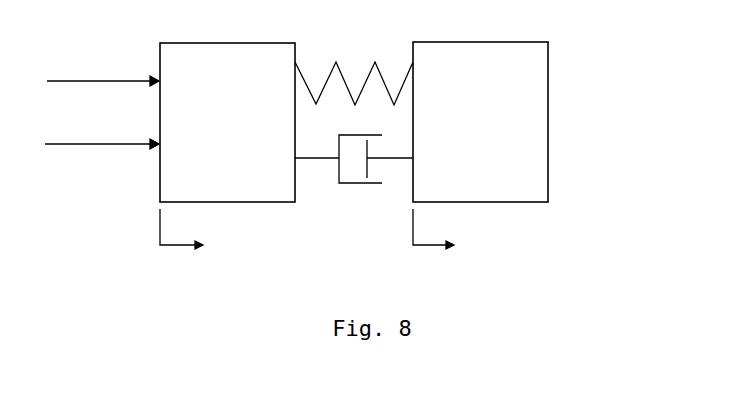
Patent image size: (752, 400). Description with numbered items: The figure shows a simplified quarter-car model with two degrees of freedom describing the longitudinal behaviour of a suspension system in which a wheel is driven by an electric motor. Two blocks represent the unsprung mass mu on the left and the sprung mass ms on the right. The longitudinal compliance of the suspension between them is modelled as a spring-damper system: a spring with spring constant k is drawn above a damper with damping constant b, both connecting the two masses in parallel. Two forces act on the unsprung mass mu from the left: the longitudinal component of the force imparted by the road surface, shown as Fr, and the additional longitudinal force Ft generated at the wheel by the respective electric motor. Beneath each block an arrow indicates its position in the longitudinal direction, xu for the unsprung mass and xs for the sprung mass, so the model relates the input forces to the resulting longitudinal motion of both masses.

The unsprung mass mu is at (227, 122).
The sprung mass ms is at (480, 122).
The spring constant k is at (354, 60).
The damping constant b is at (354, 189).
The longitudinal road force Fr is at (103, 71).
The additional longitudinal force Ft is at (102, 134).
The unsprung mass longitudinal position xu is at (186, 246).
The sprung mass longitudinal position xs is at (433, 246).